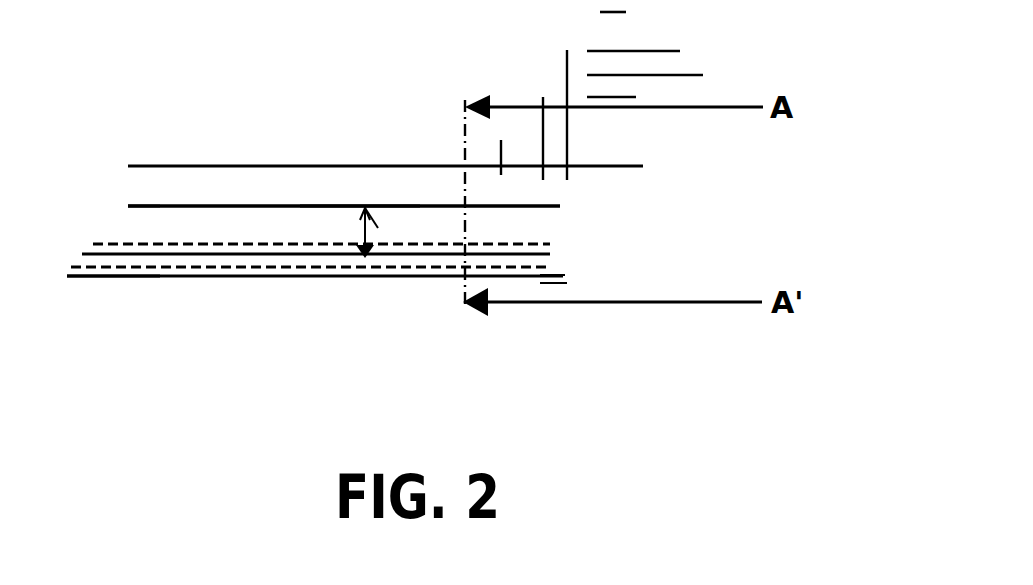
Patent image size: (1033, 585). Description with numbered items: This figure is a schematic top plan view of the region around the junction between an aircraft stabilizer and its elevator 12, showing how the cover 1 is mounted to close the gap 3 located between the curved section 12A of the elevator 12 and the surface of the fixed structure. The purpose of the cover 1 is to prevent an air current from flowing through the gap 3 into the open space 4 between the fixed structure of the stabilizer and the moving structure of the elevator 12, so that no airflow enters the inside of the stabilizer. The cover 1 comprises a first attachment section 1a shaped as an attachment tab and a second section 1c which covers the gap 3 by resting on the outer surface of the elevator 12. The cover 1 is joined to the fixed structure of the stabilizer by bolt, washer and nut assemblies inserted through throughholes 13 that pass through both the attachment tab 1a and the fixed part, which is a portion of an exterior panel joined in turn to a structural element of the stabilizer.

The cover 1 is at (340, 185).
The first attachment section 1a is at (388, 277).
The second section 1c is at (355, 222).
The gap 3 is at (367, 209).
The inside of the moving part 4 is at (407, 245).
The elevator 12 is at (395, 83).
The curved section of the elevator 12A is at (149, 212).
The throughhole in the attachment section 13 is at (387, 185).